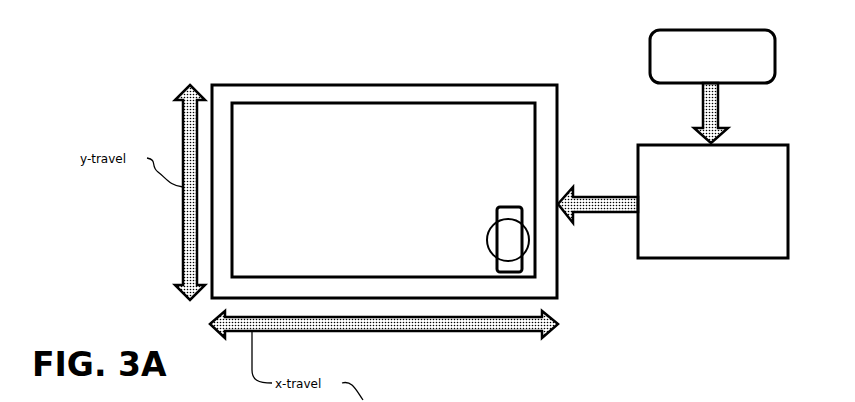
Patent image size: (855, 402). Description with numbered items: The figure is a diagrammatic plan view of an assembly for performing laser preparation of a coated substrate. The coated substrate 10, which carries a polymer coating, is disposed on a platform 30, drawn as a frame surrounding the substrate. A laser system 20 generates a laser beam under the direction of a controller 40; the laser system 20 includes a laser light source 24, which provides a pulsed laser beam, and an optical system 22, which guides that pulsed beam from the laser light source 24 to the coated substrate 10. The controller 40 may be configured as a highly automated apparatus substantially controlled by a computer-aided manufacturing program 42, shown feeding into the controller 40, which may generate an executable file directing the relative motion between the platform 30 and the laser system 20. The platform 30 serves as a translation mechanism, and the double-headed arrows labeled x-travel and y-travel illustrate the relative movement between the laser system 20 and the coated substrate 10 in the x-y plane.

The coated substrate 10 is at (372, 179).
The laser system 20 is at (424, 175).
The optical system 22 is at (486, 238).
The laser light source 24 is at (508, 218).
The platform 30 is at (370, 86).
The controller 40 is at (715, 200).
The computer-aided manufacturing program 42 is at (721, 64).